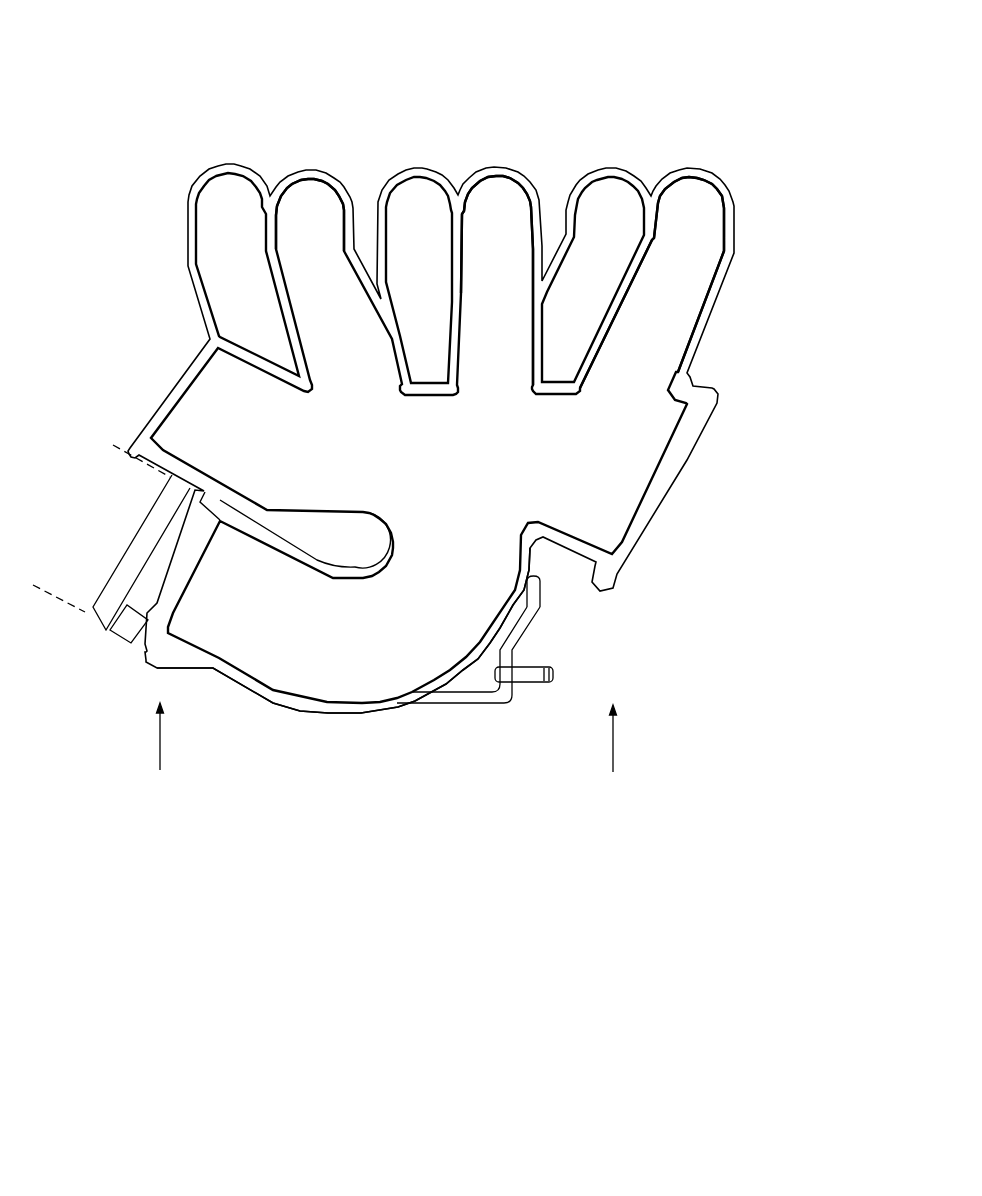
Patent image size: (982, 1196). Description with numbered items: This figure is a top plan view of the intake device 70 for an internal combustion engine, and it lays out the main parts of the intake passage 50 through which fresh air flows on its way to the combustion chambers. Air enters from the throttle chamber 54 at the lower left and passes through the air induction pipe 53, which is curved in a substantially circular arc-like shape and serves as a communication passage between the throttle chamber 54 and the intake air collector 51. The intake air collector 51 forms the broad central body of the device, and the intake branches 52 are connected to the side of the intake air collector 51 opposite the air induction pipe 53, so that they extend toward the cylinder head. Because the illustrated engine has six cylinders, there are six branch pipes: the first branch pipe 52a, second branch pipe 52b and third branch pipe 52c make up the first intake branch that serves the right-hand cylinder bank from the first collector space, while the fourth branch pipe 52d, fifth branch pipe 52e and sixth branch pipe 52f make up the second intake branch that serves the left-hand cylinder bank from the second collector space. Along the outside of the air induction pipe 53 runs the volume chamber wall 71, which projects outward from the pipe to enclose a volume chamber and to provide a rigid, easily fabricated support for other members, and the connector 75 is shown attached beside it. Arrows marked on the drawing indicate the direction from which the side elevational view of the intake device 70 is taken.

The intake passage 50 is at (310, 770).
The intake air collector 51 is at (625, 473).
The intake branches 52 is at (611, 99).
The first branch pipe 52a is at (688, 260).
The second branch pipe 52b is at (500, 208).
The third branch pipe 52c is at (310, 217).
The fourth branch pipe 52d is at (608, 198).
The fifth branch pipe 52e is at (418, 208).
The sixth branch pipe 52f is at (227, 227).
The air induction pipe 53 is at (340, 668).
The throttle chamber 54 is at (75, 590).
The intake device 70 is at (412, 808).
The volume chamber wall 71 is at (473, 683).
The connector 75 is at (533, 680).